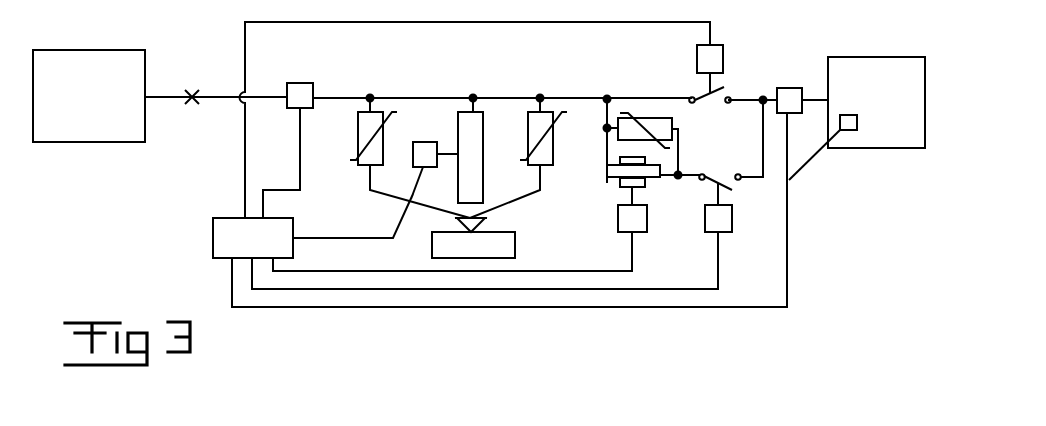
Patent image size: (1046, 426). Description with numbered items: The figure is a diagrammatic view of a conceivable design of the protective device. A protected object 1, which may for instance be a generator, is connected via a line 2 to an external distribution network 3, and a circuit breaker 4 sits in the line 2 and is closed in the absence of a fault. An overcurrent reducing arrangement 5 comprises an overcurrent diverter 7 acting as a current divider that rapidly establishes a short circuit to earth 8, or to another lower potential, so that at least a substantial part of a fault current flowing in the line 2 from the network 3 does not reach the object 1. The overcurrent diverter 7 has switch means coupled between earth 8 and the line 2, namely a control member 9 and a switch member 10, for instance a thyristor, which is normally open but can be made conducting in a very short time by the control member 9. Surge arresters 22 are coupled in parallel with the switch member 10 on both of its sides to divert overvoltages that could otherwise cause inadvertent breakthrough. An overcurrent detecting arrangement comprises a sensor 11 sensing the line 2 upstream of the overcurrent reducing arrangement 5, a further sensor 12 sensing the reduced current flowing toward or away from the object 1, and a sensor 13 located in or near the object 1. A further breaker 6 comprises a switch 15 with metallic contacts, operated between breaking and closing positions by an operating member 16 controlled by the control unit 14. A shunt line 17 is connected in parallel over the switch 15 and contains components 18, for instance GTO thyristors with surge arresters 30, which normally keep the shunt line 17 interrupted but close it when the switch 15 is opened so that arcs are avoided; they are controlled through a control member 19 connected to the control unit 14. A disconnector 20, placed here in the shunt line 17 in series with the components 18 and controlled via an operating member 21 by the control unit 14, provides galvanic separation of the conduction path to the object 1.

The protected object 1 is at (878, 135).
The line 2 is at (508, 97).
The external distribution network 3 is at (80, 125).
The circuit breaker 4 is at (190, 106).
The overcurrent reducing arrangement 5 is at (378, 323).
The further breaker 6 is at (614, 323).
The overcurrent diverter 7 is at (425, 215).
The earth 8 is at (515, 250).
The control member 9 is at (422, 142).
The switch member 10 is at (475, 152).
The sensor 11 is at (297, 85).
The sensor 12 is at (787, 88).
The sensor 13 is at (846, 115).
The control unit 14 is at (228, 227).
The switch 15 is at (713, 104).
The operating member 16 is at (707, 64).
The shunt line 17 is at (765, 164).
The components 18 is at (620, 183).
The control member 19 is at (638, 220).
The disconnector 20 is at (712, 172).
The operating member 21 is at (723, 223).
The surge arrester 22 is at (357, 126).
The surge arrester 30 is at (657, 125).